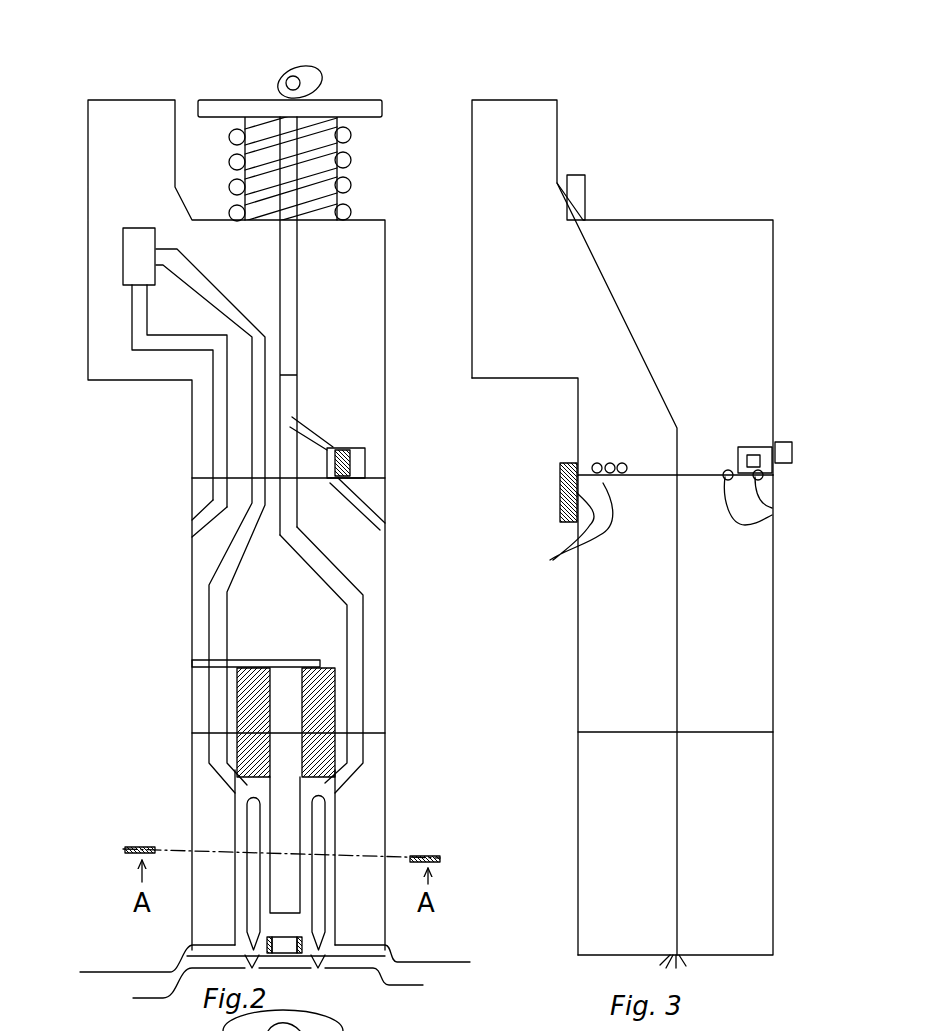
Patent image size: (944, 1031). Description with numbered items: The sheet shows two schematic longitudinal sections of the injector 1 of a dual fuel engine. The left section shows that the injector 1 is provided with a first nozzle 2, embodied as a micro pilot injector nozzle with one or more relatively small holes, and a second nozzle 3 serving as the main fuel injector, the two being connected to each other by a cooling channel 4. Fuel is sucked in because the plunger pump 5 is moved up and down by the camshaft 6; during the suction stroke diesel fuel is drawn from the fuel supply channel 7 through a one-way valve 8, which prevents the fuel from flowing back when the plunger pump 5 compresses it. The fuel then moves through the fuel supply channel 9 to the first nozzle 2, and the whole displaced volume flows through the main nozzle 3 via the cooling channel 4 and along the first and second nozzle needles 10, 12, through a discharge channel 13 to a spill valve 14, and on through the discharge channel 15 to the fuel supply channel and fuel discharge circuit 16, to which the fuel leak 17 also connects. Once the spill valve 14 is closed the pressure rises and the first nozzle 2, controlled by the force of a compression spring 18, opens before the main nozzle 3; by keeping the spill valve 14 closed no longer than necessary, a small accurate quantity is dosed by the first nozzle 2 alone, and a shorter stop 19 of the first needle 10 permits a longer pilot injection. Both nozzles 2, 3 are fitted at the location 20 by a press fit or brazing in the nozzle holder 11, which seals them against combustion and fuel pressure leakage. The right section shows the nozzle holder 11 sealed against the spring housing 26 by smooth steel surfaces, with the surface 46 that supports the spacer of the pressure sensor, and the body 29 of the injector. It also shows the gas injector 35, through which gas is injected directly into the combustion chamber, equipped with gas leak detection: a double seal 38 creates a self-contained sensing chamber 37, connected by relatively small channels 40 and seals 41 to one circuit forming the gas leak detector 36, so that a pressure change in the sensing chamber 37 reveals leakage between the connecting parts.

In FIG. 2, the injector 1 is at (399, 643).
In FIG. 3, the injector 1 is at (794, 290).
In FIG. 2, the first nozzle 2 is at (385, 988).
In FIG. 2, the second nozzle 3 is at (208, 992).
In FIG. 2, the cooling channel 4 is at (283, 923).
In FIG. 2, the plunger pump 5 is at (290, 317).
In FIG. 2, the camshaft 6 is at (316, 68).
In FIG. 2, the fuel supply channel 7 is at (385, 525).
In FIG. 2, the one-way valve 8 is at (357, 463).
In FIG. 2, the fuel supply channel 9 is at (322, 568).
In FIG. 2, the first nozzle needle 10 is at (320, 817).
In FIG. 2, the nozzle holder 11 is at (207, 927).
In FIG. 3, the nozzle holder 11 is at (590, 905).
In FIG. 2, the second nozzle needle 12 is at (253, 812).
In FIG. 2, the discharge channel 13 is at (217, 610).
In FIG. 2, the spill valve 14 is at (137, 257).
In FIG. 2, the discharge channel 15 is at (218, 413).
In FIG. 2, the fuel supply channel and fuel discharge circuit 16 is at (190, 527).
In FIG. 2, the fuel leak 17 is at (287, 663).
In FIG. 2, the compression spring 18 is at (235, 700).
In FIG. 2, the stop 19 is at (318, 787).
In FIG. 2, the fitting location 20 is at (271, 964).
In FIG. 3, the spring housing 26 is at (592, 680).
In FIG. 3, the injector body 29 is at (724, 235).
In FIG. 2, the gas injector 35 is at (340, 1028).
In FIG. 3, the gas injector 35 is at (673, 943).
In FIG. 3, the gas leak detector 36 is at (782, 455).
In FIG. 3, the sensing chamber 37 is at (603, 467).
In FIG. 3, the double seal 38 is at (760, 507).
In FIG. 3, the detection channels 40 is at (753, 448).
In FIG. 3, the seals 41 is at (559, 523).
In FIG. 3, the surface 46 is at (723, 732).